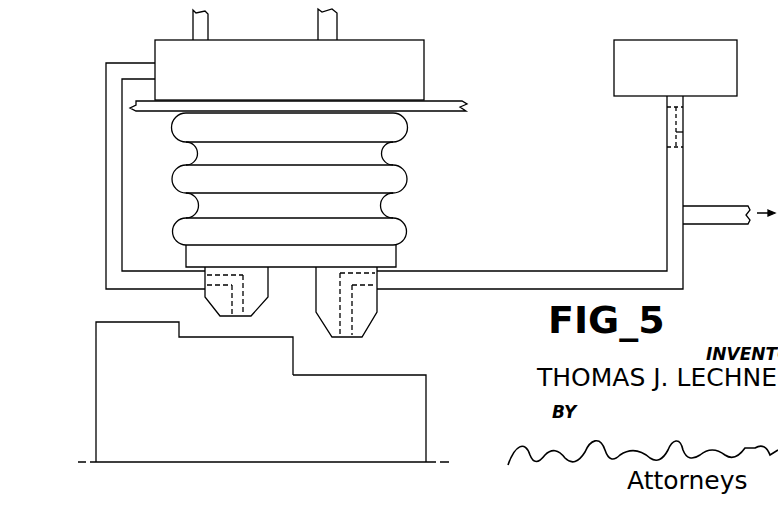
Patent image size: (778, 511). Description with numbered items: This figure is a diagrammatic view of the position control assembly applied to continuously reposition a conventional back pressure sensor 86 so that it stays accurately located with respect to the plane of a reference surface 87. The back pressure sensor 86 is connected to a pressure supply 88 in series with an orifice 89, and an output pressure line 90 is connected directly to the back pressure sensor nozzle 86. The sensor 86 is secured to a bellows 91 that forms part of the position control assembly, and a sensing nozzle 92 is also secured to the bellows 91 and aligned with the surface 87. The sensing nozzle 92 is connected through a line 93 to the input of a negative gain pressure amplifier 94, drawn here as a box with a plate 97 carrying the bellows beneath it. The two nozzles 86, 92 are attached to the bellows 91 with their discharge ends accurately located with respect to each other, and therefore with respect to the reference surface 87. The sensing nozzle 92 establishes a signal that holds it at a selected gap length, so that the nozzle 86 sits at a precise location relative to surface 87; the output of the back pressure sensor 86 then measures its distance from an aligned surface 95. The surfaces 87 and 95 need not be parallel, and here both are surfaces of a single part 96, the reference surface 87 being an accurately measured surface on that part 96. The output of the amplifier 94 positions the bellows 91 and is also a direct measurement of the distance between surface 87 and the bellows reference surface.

The negative gain pressure amplifier 94 is at (406, 68).
The plate 97 is at (441, 112).
The bellows 91 is at (405, 186).
The line 93 is at (110, 205).
The sensing nozzle 92 is at (253, 291).
The back pressure sensor 86 is at (368, 304).
The pressure supply 88 is at (694, 44).
The orifice 89 is at (686, 132).
The output pressure line 90 is at (735, 197).
The reference surface 87 is at (241, 330).
The aligned surface 95 is at (406, 374).
The part 96 is at (312, 450).